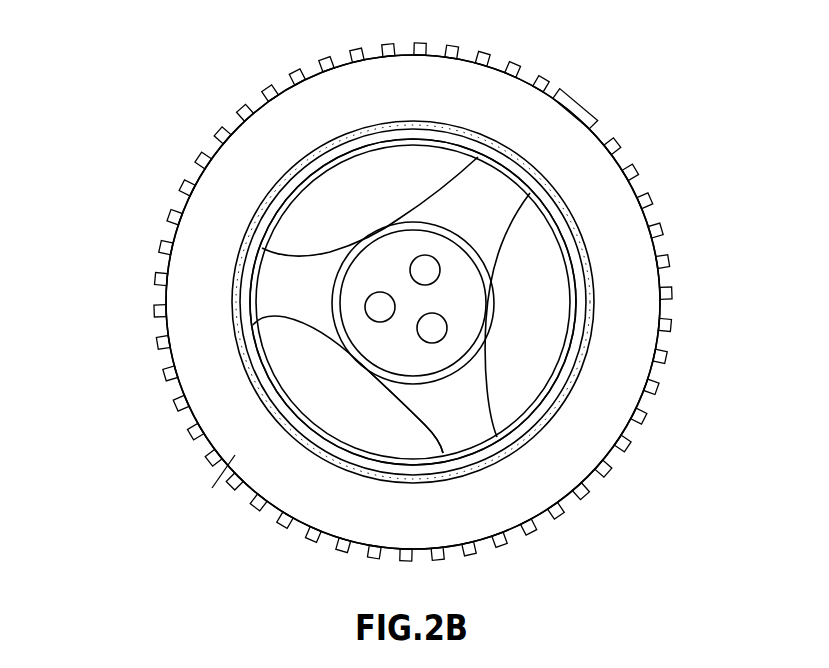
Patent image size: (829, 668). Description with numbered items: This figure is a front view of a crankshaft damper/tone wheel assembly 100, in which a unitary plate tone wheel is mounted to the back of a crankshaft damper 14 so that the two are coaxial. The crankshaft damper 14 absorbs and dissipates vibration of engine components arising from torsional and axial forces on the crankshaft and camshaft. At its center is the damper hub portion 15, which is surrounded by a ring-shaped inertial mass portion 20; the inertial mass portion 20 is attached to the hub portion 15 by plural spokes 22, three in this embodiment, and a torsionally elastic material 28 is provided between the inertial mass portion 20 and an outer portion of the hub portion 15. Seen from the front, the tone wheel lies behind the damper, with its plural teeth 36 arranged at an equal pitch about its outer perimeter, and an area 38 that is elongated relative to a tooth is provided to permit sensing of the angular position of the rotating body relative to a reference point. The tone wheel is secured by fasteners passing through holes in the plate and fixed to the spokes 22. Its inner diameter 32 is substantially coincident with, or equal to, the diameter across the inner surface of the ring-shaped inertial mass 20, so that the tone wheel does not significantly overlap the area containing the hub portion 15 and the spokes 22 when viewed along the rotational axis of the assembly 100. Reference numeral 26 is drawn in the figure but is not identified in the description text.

The crankshaft damper/tone wheel assembly 100 is at (161, 163).
The crankshaft damper 14 is at (166, 389).
The ring-shaped inertial mass portion 20 is at (212, 488).
The teeth 36 is at (670, 325).
The elongated area 38 is at (575, 100).
The torsionally elastic material 28 is at (592, 292).
The rim flange 26 is at (278, 400).
The inner diameter 32 is at (287, 213).
The spokes 22 is at (430, 400).
The damper hub portion 15 is at (493, 297).